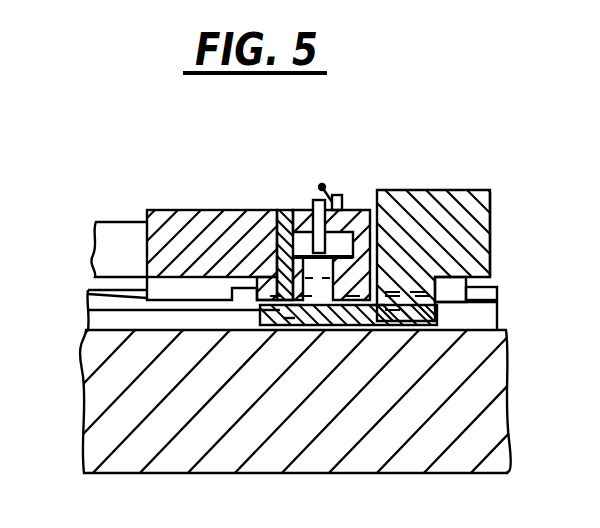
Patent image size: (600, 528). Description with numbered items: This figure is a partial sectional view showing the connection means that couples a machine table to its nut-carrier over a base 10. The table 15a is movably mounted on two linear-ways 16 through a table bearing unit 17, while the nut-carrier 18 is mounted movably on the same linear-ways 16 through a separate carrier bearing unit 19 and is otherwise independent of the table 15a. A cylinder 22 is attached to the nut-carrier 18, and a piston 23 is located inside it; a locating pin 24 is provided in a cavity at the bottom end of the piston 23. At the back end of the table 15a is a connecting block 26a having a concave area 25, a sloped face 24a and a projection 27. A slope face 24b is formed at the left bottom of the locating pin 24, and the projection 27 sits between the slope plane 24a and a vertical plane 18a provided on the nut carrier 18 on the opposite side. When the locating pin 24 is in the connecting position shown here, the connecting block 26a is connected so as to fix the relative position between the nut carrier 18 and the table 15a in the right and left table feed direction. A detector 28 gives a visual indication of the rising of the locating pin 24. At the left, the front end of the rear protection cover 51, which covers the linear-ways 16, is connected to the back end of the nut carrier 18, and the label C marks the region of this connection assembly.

The base block 10 is at (507, 376).
The table 15a is at (491, 214).
The linear-ways 16 is at (88, 290).
The table bearing unit 17 is at (497, 294).
The nut-carrier 18 is at (177, 210).
The vertical plane 18a is at (278, 322).
The carrier bearing unit 19 is at (88, 308).
The cylinder 22 is at (357, 210).
The piston 23 is at (290, 275).
The locating pin 24 is at (350, 302).
The sloped face 24a is at (288, 325).
The slope face 24b is at (292, 330).
The concave area 25 is at (313, 312).
The connecting block 26a is at (378, 308).
The projection 27 is at (300, 287).
The detector 28 is at (338, 195).
The rear protection cover 51 is at (110, 222).
The chip C is at (107, 172).